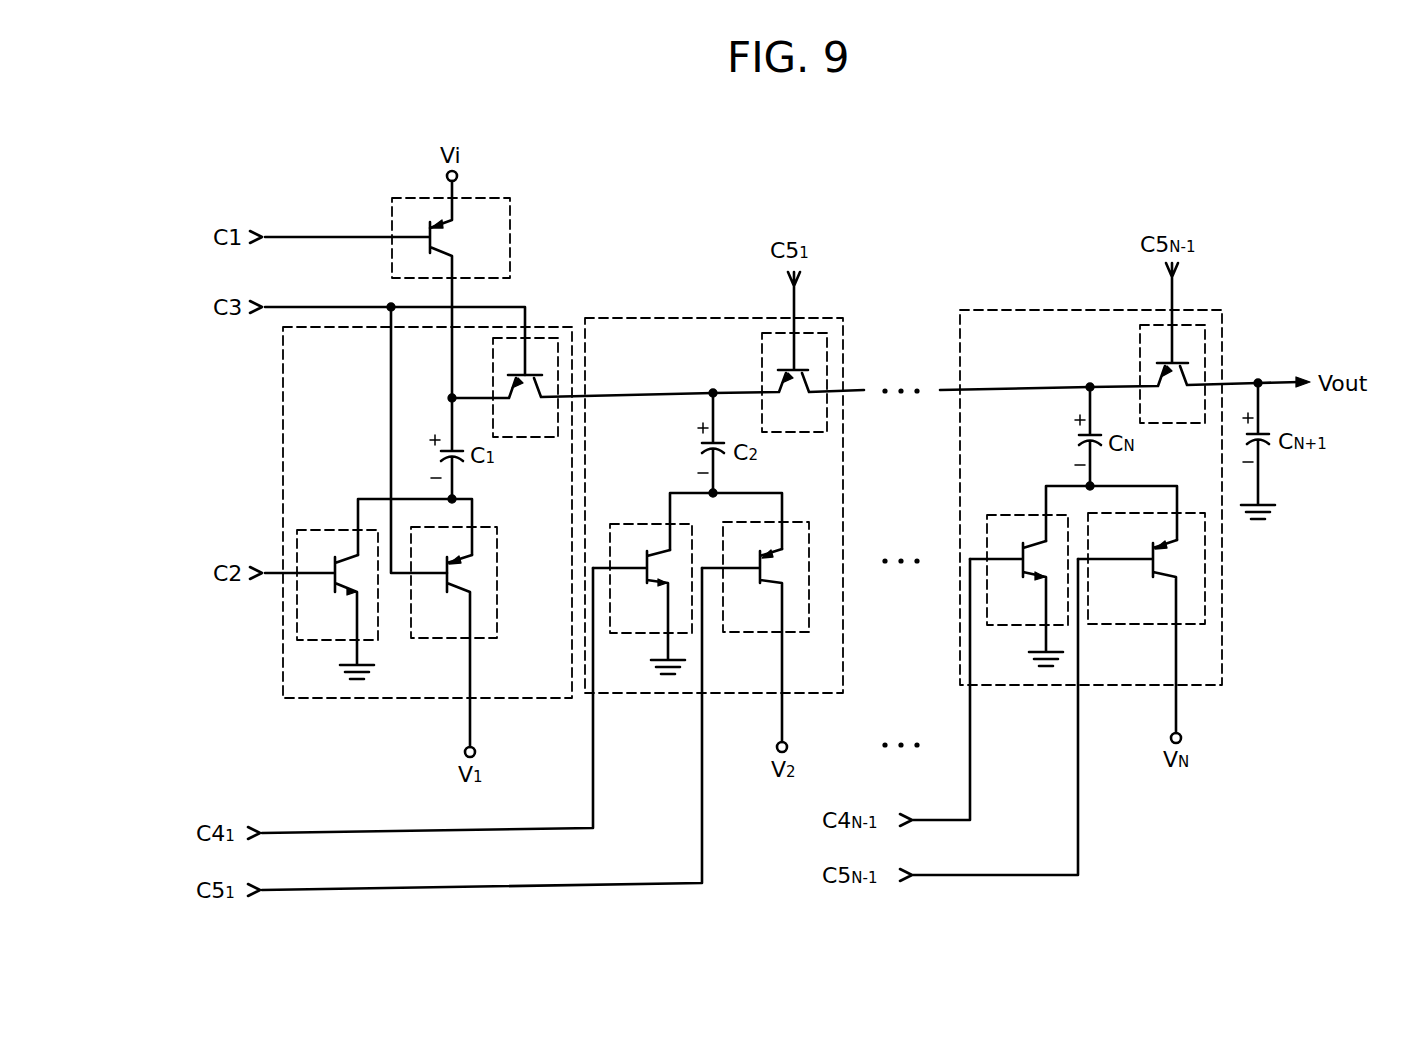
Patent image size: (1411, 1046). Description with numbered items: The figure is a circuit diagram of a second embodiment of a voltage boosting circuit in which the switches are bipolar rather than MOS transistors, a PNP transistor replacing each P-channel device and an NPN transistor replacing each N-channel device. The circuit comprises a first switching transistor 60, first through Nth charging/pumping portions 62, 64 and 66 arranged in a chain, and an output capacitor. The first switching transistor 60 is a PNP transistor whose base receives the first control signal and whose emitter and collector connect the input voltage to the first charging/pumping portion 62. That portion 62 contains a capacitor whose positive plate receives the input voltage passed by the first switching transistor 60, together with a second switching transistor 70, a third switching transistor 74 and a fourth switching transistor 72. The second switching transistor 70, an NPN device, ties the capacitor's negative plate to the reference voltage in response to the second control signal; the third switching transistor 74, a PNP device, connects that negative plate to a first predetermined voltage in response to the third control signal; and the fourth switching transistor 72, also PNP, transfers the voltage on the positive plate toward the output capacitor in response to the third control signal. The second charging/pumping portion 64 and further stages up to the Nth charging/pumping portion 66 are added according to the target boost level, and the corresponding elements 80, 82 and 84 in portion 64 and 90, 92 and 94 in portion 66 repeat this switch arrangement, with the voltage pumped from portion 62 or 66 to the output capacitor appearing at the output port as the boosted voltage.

The first switching transistor 60 is at (510, 236).
The first charging/pumping portion 62 is at (380, 698).
The second charging/pumping portion 64 is at (655, 693).
The Nth charging/pumping portion 66 is at (1027, 688).
The second switching transistor 70 is at (333, 530).
The fourth switching transistor 72 is at (531, 440).
The third switching transistor 74 is at (497, 592).
The NPN transistor QN2 block 80 is at (640, 522).
The PNP transistor QP4 block 82 is at (800, 432).
The PNP transistor QP5 block 84 is at (790, 633).
The NPN transistor QNN block 90 is at (1010, 515).
The PNP transistor QP2N block 92 is at (1182, 425).
The PNP transistor QP2N+1 block 94 is at (1135, 625).